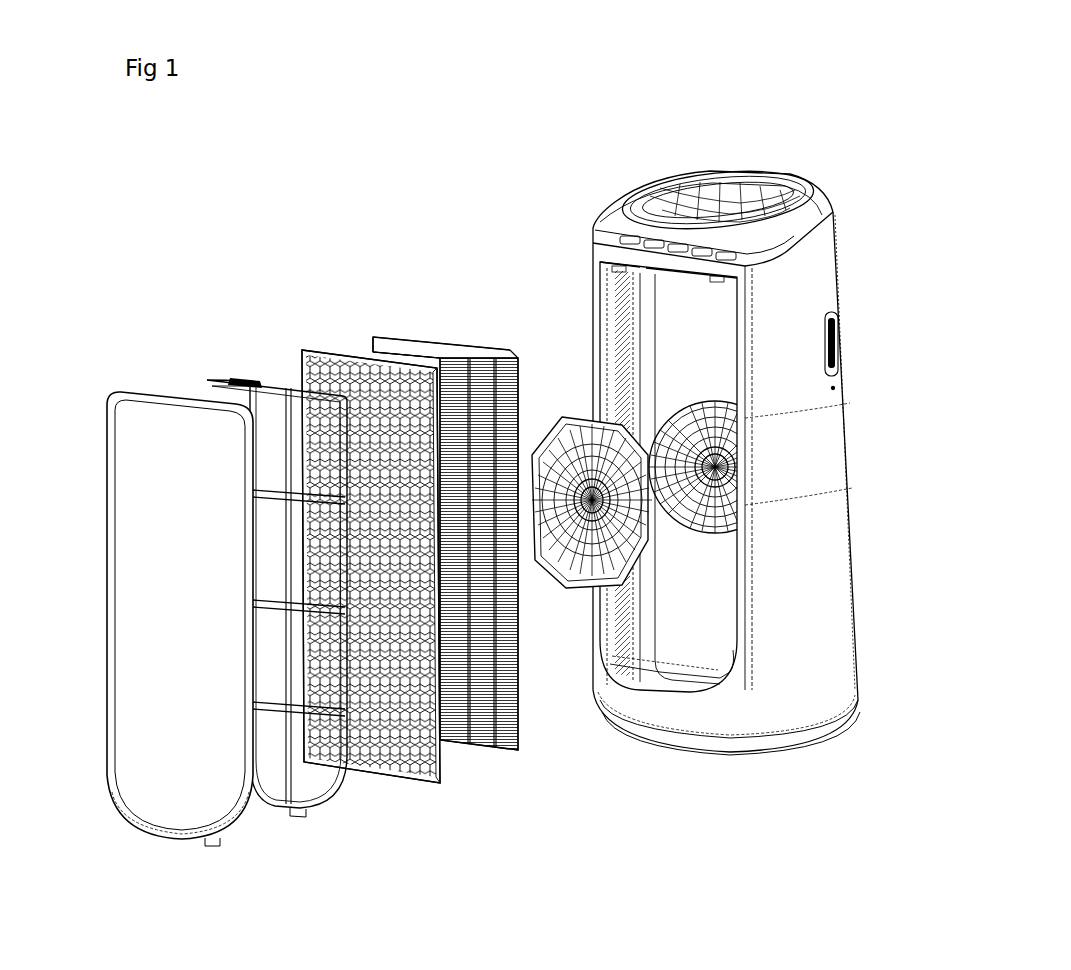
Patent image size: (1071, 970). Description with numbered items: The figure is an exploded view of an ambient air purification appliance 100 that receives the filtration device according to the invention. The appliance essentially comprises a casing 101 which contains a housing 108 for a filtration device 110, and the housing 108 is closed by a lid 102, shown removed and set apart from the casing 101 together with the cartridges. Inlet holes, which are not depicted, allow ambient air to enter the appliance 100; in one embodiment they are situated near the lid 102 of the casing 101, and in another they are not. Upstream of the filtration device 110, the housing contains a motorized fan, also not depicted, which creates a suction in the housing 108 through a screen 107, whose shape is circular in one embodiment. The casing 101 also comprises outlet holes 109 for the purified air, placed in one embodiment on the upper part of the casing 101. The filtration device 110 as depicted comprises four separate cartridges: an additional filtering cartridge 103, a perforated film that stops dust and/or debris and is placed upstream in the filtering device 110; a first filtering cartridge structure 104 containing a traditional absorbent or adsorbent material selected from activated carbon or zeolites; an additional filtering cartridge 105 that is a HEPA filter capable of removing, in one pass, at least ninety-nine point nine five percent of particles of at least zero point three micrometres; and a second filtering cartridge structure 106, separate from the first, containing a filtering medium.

The ambient air purification appliance 100 is at (498, 110).
The casing 101 is at (837, 300).
The lid 102 is at (117, 428).
The filtering cartridge 103 is at (224, 378).
The first filtering cartridge structure 104 is at (340, 365).
The filtering cartridge 105 is at (417, 335).
The second filtering cartridge structure 106 is at (600, 445).
The screen 107 is at (733, 483).
The housing 108 is at (714, 653).
The outlet holes 109 is at (735, 190).
The filtration device 110 is at (490, 248).